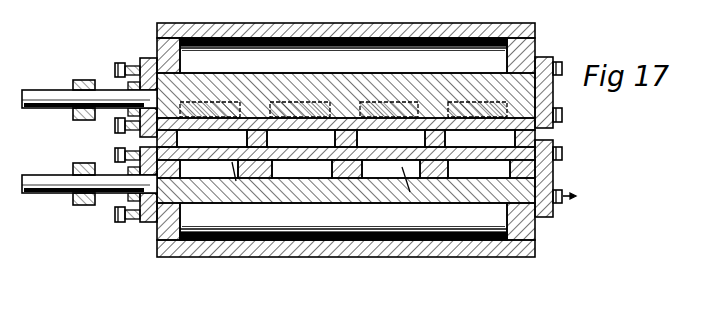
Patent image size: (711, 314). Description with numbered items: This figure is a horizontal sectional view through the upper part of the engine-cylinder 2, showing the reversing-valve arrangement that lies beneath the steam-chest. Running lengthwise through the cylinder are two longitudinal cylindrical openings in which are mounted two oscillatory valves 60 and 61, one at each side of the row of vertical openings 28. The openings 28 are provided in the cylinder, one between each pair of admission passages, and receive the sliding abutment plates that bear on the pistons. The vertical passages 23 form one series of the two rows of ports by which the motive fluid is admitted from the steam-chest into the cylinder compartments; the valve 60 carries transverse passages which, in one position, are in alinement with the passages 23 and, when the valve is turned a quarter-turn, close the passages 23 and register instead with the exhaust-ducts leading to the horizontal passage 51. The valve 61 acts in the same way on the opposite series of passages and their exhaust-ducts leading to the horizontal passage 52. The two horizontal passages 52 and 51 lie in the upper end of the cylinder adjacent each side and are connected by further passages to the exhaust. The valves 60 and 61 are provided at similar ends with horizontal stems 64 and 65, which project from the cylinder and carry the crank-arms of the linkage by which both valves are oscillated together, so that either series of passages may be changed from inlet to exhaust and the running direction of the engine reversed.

The engine-cylinder 2 is at (341, 257).
The vertical passages 23 is at (285, 166).
The vertical openings 28 is at (346, 139).
The horizontal passage 51 is at (343, 221).
The horizontal passage 52 is at (343, 55).
The oscillatory valve 60 is at (327, 193).
The oscillatory valve 61 is at (244, 77).
The horizontal stem 64 is at (48, 186).
The horizontal stem 65 is at (40, 98).